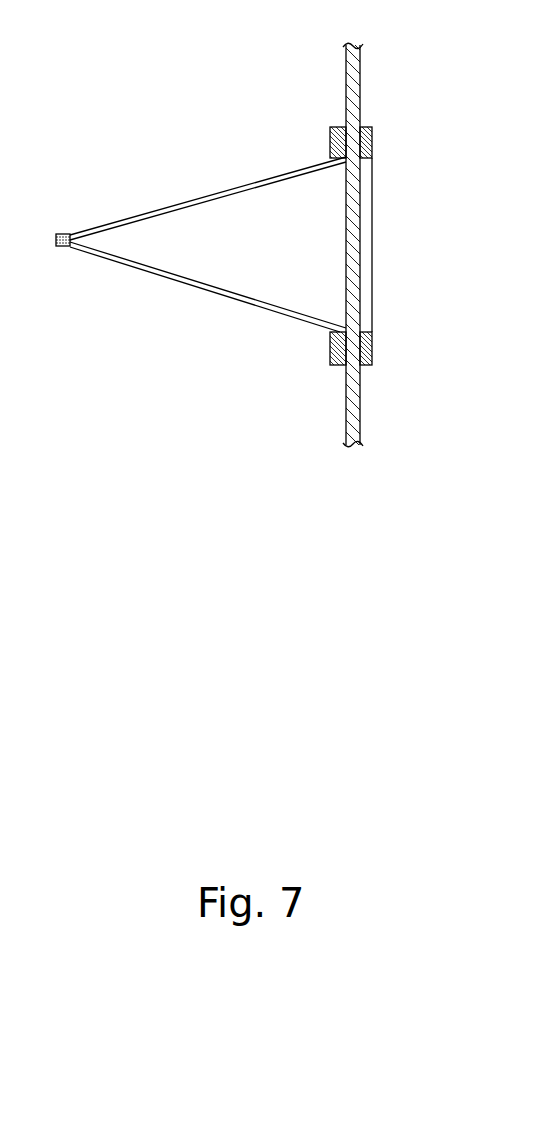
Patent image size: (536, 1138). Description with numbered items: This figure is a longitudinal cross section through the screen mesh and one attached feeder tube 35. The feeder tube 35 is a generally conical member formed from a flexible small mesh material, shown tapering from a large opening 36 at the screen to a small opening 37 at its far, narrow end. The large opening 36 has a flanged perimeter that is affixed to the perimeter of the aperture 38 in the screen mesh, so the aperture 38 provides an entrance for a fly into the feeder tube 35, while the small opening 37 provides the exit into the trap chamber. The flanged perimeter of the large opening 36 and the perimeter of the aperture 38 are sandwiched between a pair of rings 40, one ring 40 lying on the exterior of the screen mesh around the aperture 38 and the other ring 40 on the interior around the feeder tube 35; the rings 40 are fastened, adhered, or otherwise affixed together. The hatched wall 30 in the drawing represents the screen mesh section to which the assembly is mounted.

The plate / wall 30 is at (361, 70).
The feeder tube 35 is at (132, 218).
The large opening 36 is at (343, 255).
The small opening 37 is at (70, 247).
The aperture 38 is at (358, 253).
The ring 40 is at (333, 130).